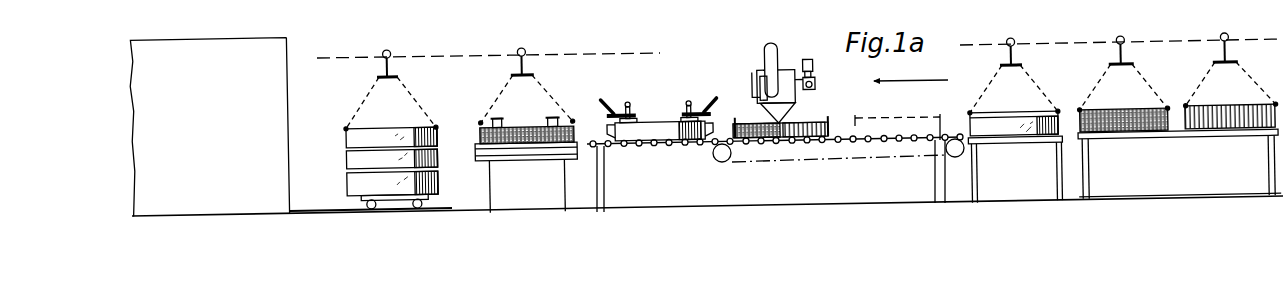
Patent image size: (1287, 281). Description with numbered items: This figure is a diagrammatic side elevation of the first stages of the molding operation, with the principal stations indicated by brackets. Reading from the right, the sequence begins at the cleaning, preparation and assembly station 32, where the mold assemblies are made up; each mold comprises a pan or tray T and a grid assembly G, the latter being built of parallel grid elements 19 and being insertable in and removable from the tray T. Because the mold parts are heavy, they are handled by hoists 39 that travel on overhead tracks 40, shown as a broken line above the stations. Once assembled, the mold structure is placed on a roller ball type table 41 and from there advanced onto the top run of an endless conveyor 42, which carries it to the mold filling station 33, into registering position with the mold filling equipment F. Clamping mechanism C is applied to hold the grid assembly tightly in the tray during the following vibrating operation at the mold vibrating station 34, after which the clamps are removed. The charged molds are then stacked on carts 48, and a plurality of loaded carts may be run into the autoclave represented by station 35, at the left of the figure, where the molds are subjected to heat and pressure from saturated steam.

The autoclaving station 35 is at (293, 222).
The cart 48 is at (392, 198).
The mold vibrating station 34 is at (581, 214).
The clamping mechanism C is at (686, 101).
The mold filling equipment F is at (764, 70).
The grid elements 19 is at (803, 123).
The mold filling station 33 is at (866, 211).
The endless conveyor 42 is at (868, 160).
The roller ball type table 41 is at (1000, 143).
The tray T is at (1077, 118).
The grid assembly G is at (1240, 112).
The cleaning, preparation and assembly station 32 is at (1284, 204).
The overhead tracks 40 is at (1166, 43).
The hoist 39 is at (1229, 53).